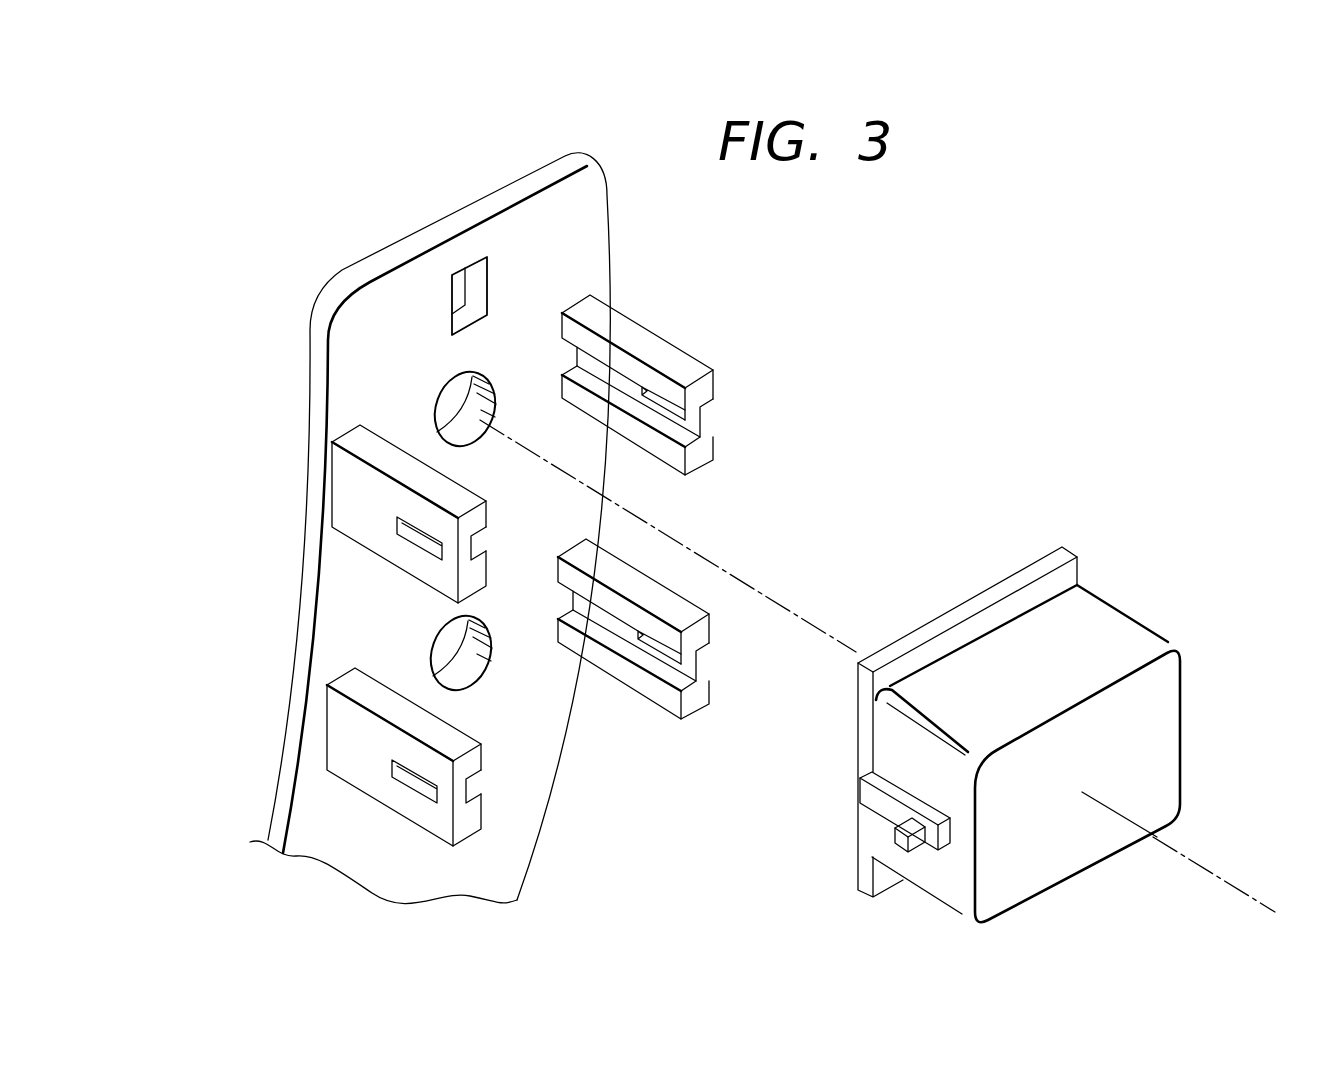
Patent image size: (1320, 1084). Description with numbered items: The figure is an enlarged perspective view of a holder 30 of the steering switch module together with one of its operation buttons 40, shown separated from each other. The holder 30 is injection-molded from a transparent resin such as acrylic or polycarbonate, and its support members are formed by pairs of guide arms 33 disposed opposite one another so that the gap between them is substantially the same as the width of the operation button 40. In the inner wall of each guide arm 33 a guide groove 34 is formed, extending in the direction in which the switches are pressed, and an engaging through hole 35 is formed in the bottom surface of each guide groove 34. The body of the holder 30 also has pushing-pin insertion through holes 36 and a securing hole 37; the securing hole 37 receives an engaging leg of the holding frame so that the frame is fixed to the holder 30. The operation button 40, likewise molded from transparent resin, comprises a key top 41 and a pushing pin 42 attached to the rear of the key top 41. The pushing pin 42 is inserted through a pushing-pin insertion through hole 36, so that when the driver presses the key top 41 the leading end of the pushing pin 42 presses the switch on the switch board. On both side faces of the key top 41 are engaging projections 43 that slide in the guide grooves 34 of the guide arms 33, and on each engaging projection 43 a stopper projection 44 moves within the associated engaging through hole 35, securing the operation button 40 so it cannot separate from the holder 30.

The holder 30 is at (363, 264).
The guide arm 33 is at (678, 367).
The guide groove 34 is at (688, 442).
The engaging through hole 35 is at (423, 540).
The pushing-pin insertion through hole 36 is at (450, 406).
The securing hole 37 is at (460, 284).
The operation button 40 is at (1125, 608).
The key top 41 is at (1163, 743).
The pushing pin 42 is at (992, 593).
The engaging projection 43 is at (873, 803).
The stopper projection 44 is at (897, 838).